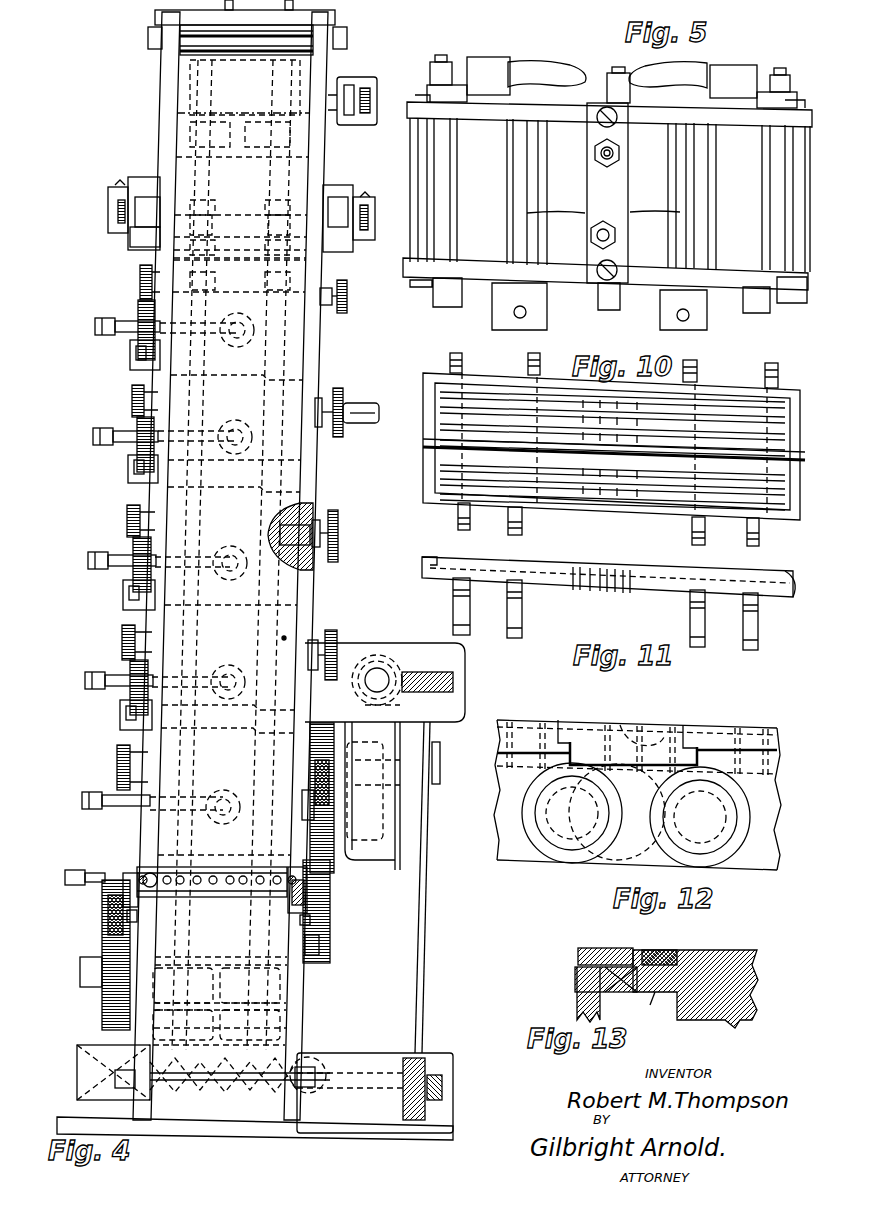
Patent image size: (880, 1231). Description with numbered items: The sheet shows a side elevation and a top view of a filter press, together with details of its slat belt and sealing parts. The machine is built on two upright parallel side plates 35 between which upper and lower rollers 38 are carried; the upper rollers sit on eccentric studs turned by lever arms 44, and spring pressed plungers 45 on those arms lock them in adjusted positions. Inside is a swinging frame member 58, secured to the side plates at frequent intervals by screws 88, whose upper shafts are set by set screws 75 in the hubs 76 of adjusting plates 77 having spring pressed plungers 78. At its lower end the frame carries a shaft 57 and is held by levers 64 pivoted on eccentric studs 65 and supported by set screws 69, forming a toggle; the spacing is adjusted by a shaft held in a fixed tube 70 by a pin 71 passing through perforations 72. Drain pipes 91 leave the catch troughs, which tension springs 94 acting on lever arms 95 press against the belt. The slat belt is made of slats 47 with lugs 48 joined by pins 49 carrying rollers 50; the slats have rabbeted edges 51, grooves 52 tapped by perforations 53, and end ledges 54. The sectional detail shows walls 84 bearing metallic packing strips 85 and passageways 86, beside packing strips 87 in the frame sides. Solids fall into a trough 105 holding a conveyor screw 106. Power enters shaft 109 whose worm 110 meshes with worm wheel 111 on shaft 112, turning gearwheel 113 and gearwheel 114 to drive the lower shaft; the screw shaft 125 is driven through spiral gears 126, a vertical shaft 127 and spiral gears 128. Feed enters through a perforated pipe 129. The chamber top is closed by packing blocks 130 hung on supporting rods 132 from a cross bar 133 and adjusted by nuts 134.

In FIG. 4, the side plates 35 is at (164, 141).
In FIG. 5, the side plates 35 is at (500, 112).
In FIG. 5, the rollers 38 is at (603, 211).
In FIG. 5, the lever arms 44 is at (645, 70).
In FIG. 4, the spring pressed plungers 45 is at (350, 86).
In FIG. 5, the spring pressed plungers 45 is at (430, 72).
In FIG. 10, the slats 47 is at (440, 458).
In FIG. 11, the slats 47 is at (660, 585).
In FIG. 12, the slats 47 is at (637, 795).
In FIG. 13, the slats 47 is at (577, 999).
In FIG. 10, the lugs 48 is at (462, 360).
In FIG. 11, the lugs 48 is at (470, 594).
In FIG. 12, the pins 49 is at (685, 808).
In FIG. 12, the rollers 50 is at (612, 845).
In FIG. 10, the rabbeted edges 51 is at (806, 455).
In FIG. 11, the rabbeted edges 51 is at (718, 578).
In FIG. 12, the rabbeted edges 51 is at (568, 735).
In FIG. 10, the grooves 52 is at (650, 492).
In FIG. 10, the perforations 53 is at (590, 490).
In FIG. 12, the perforations 53 is at (630, 740).
In FIG. 11, the ledges 54 is at (437, 556).
In FIG. 13, the ledges 54 is at (575, 976).
In FIG. 4, the shaft 57 is at (76, 870).
In FIG. 4, the swinging frame member 58 is at (284, 638).
In FIG. 13, the swinging frame member 58 is at (740, 990).
In FIG. 4, the levers 64 is at (135, 880).
In FIG. 4, the eccentric pins or studs 65 is at (100, 897).
In FIG. 4, the set screws 69 is at (140, 916).
In FIG. 4, the fixed tube 70 is at (250, 867).
In FIG. 4, the pin 71 is at (170, 875).
In FIG. 4, the perforations 72 is at (230, 885).
In FIG. 4, the set screws 75 is at (121, 182).
In FIG. 4, the hubs 76 is at (110, 192).
In FIG. 4, the adjusting plates 77 is at (140, 240).
In FIG. 4, the spring pressed plungers 78 is at (118, 212).
In FIG. 13, the walls 84 is at (655, 995).
In FIG. 13, the metallic packing strips 85 is at (578, 953).
In FIG. 13, the passageways 86 is at (625, 992).
In FIG. 13, the packing strips 87 is at (665, 950).
In FIG. 4, the screws 88 is at (340, 515).
In FIG. 4, the drain pipes 91 is at (110, 425).
In FIG. 4, the tension springs 94 is at (140, 318).
In FIG. 4, the lever arms 95 is at (150, 360).
In FIG. 4, the trough 105 is at (343, 1058).
In FIG. 4, the conveyor screw 106 is at (312, 1055).
In FIG. 4, the shaft 109 is at (378, 668).
In FIG. 4, the worm 110 is at (396, 668).
In FIG. 4, the worm wheel 111 is at (385, 705).
In FIG. 4, the shaft 112 is at (440, 765).
In FIG. 4, the gearwheel 113 is at (328, 722).
In FIG. 4, the gearwheel 114 is at (328, 948).
In FIG. 4, the shaft 125 is at (368, 1085).
In FIG. 4, the spiral gears 126 is at (440, 1090).
In FIG. 4, the vertical shaft 127 is at (417, 1005).
In FIG. 4, the spiral gears 128 is at (440, 672).
In FIG. 4, the pipe 129 is at (352, 400).
In FIG. 4, the packing blocks 130 is at (242, 222).
In FIG. 4, the supporting rods 132 is at (262, 96).
In FIG. 5, the supporting rods 132 is at (594, 153).
In FIG. 4, the cross bar 133 is at (162, 12).
In FIG. 5, the cross bar 133 is at (615, 186).
In FIG. 4, the nuts 134 is at (259, 6).
In FIG. 5, the nuts 134 is at (620, 158).